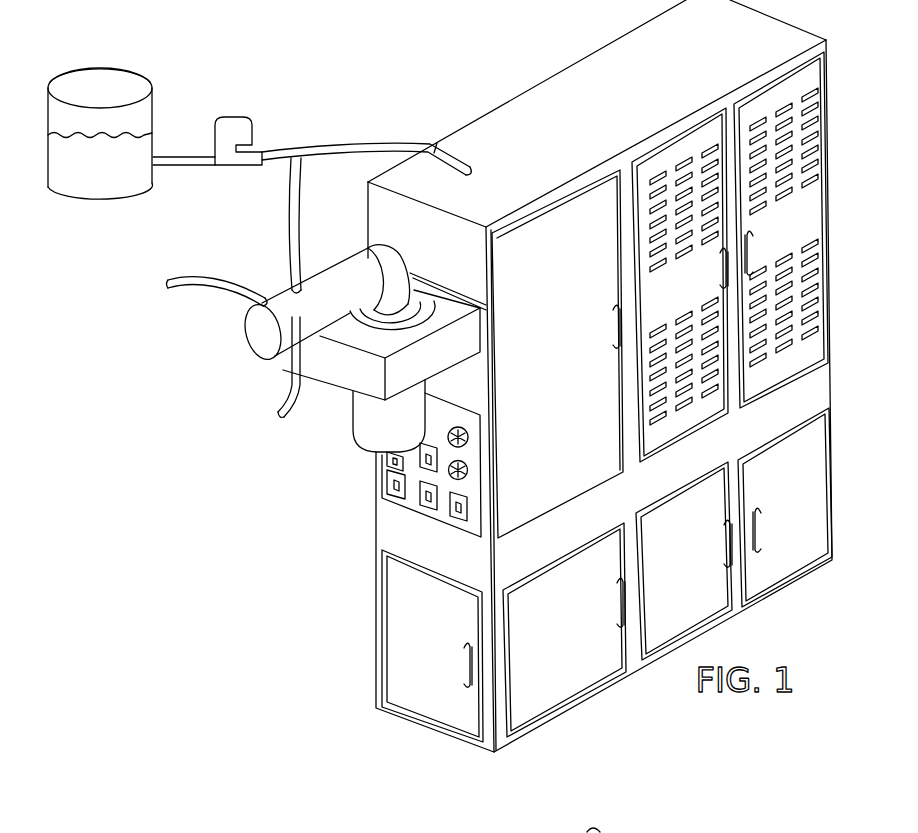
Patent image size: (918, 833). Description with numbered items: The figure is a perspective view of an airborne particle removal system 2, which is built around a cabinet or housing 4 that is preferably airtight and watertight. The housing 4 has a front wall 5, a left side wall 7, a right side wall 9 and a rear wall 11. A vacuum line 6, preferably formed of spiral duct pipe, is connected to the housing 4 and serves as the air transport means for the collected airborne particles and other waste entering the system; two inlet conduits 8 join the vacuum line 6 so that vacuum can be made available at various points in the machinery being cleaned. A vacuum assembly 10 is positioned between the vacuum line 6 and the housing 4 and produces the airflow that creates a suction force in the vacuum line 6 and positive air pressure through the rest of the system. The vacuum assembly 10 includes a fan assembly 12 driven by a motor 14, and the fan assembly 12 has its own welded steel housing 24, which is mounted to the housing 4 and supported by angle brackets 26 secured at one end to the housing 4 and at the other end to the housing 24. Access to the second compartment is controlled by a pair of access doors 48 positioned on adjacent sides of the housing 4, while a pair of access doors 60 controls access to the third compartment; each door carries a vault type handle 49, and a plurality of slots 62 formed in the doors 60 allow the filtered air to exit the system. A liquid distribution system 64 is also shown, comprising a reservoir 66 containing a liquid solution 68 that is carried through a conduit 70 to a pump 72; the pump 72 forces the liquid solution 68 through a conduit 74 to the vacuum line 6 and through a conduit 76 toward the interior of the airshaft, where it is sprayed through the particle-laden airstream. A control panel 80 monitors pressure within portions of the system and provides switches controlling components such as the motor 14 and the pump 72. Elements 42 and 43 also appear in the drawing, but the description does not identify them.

The airborne particle removal system 2 is at (326, 533).
The cabinet or housing 4 is at (580, 121).
The front wall 5 is at (748, 431).
The vacuum line 6 is at (323, 309).
The left side wall 7 is at (440, 572).
The inlet conduits 8 is at (177, 293).
The right side wall 9 is at (777, 20).
The vacuum assembly 10 is at (348, 450).
The rear wall 11 is at (535, 90).
The fan assembly 12 is at (347, 366).
The motor 14 is at (380, 440).
The fan assembly housing 24 is at (398, 379).
The angle brackets 26 is at (447, 413).
The front door 42 is at (538, 329).
The door handle 43 is at (623, 330).
The access doors 48 is at (546, 639).
The vault type handle 49 is at (756, 252).
The access doors 60 is at (810, 205).
The slots 62 is at (688, 318).
The liquid distribution system 64 is at (146, 72).
The reservoir 66 is at (75, 68).
The liquid solution 68 is at (60, 153).
The conduit 70 is at (183, 157).
The pump 72 is at (246, 126).
The conduit 74 is at (286, 222).
The conduit 76 is at (402, 143).
The control panel 80 is at (478, 490).